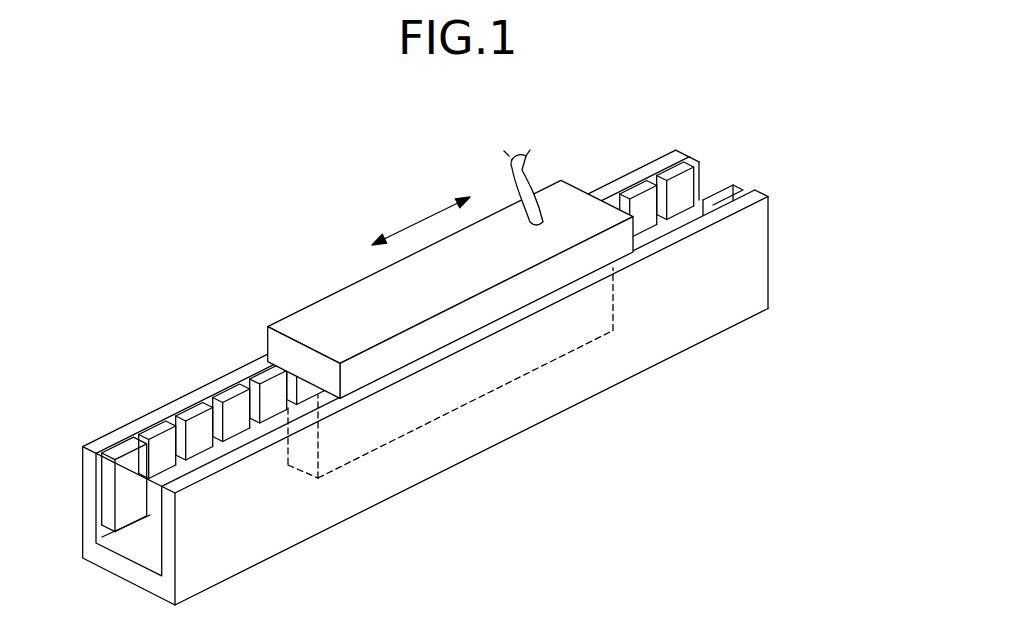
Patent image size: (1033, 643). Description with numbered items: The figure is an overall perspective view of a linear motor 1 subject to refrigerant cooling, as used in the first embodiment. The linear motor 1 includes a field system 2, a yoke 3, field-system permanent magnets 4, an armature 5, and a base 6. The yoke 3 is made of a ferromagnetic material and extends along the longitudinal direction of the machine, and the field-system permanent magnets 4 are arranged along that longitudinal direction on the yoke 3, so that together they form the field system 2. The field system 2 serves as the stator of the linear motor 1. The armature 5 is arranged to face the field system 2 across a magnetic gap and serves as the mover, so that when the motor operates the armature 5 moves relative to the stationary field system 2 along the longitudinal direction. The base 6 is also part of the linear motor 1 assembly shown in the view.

The linear motor 1 is at (247, 231).
The field system 2 is at (553, 437).
The yoke 3 is at (625, 183).
The field-system permanent magnets 4 is at (672, 172).
The armature 5 is at (319, 283).
The base 6 is at (268, 338).